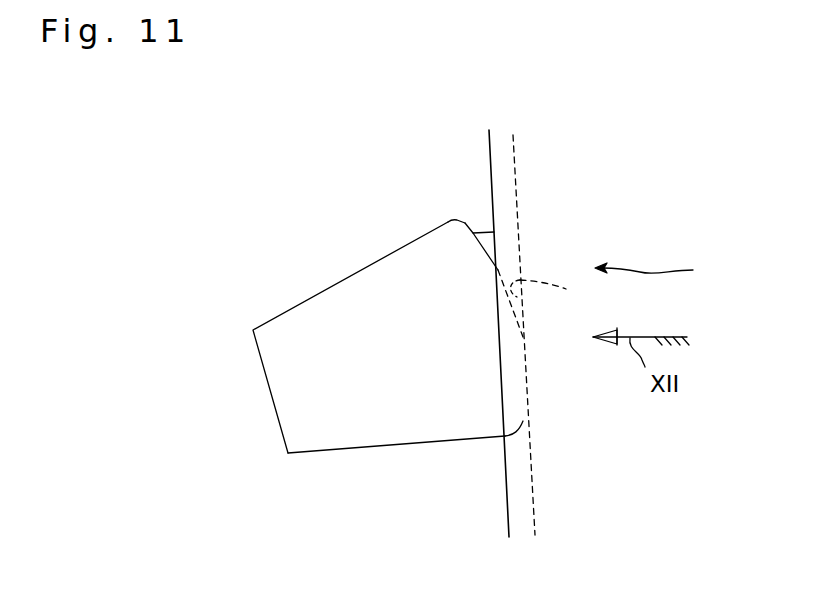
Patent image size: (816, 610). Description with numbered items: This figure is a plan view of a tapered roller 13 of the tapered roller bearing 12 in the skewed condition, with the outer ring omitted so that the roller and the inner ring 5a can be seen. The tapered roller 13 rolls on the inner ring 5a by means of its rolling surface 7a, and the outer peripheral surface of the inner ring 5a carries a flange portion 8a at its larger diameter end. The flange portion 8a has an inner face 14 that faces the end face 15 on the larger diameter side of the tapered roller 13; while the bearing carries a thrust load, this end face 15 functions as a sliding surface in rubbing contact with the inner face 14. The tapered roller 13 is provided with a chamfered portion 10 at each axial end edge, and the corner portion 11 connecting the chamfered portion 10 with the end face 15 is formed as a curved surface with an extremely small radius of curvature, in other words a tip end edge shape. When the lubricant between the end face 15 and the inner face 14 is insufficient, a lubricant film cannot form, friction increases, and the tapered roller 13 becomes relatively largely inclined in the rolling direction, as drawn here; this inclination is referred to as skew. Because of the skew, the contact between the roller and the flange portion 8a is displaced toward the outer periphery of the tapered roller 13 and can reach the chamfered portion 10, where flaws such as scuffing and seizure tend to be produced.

The inner ring 5a is at (537, 485).
The rolling surface of the tapered roller 7a is at (400, 447).
The flange portion 8a is at (510, 240).
The chamfered portion 10 is at (457, 220).
The corner portion 11 is at (465, 223).
The tapered roller bearing 12 is at (662, 272).
The tapered roller 13 is at (358, 292).
The inner face 14 is at (553, 303).
The end face on the larger diameter side 15 is at (494, 232).